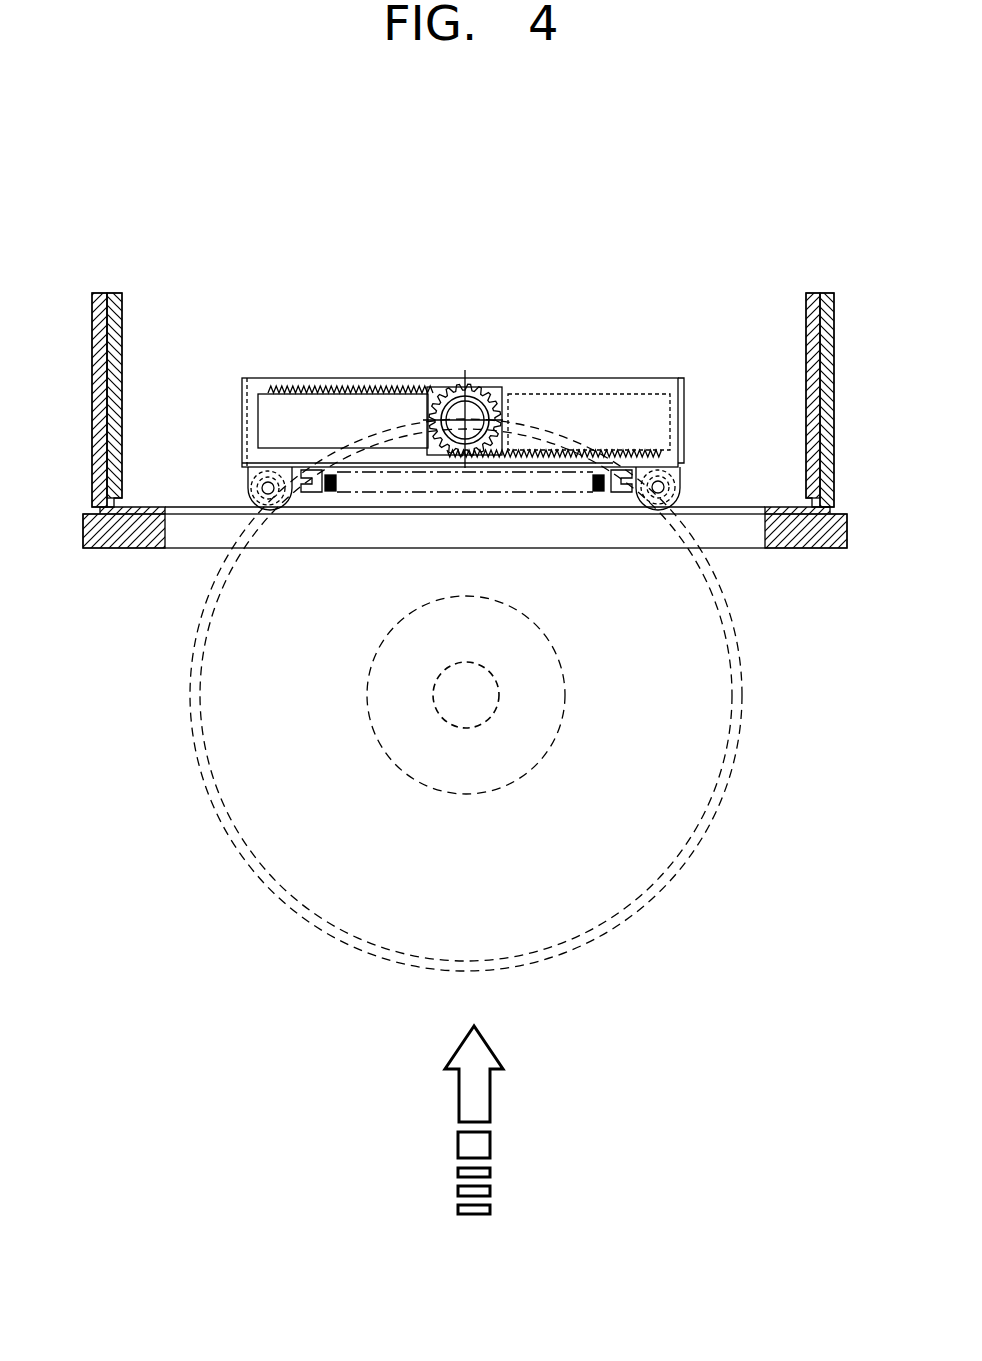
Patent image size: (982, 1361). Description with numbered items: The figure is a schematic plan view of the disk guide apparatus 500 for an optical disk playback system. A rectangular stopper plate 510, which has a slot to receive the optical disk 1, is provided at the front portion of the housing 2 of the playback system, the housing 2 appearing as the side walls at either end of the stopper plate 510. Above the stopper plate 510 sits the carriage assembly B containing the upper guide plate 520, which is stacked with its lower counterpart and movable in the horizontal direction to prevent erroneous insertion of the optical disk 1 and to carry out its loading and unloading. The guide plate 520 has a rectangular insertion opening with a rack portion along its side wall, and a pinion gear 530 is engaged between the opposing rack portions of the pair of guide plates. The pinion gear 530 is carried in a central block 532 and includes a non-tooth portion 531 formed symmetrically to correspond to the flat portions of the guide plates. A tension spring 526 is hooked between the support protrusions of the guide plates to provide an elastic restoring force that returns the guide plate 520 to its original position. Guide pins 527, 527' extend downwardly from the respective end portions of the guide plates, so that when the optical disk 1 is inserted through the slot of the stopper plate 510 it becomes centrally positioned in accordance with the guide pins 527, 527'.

The optical disk 1 is at (723, 677).
The housing 2 is at (827, 443).
The disk guide apparatus 500 is at (463, 277).
The rectangular stopper plate 510 is at (192, 543).
The upper guide plate 520 is at (333, 398).
The tension spring 526 is at (601, 482).
The guide pin 527 is at (711, 469).
The guide pin 527' is at (220, 467).
The pinion gear 530 is at (497, 403).
The non-tooth portion 531 is at (467, 395).
The gear housing 532 is at (430, 398).
The carriage body B is at (241, 378).